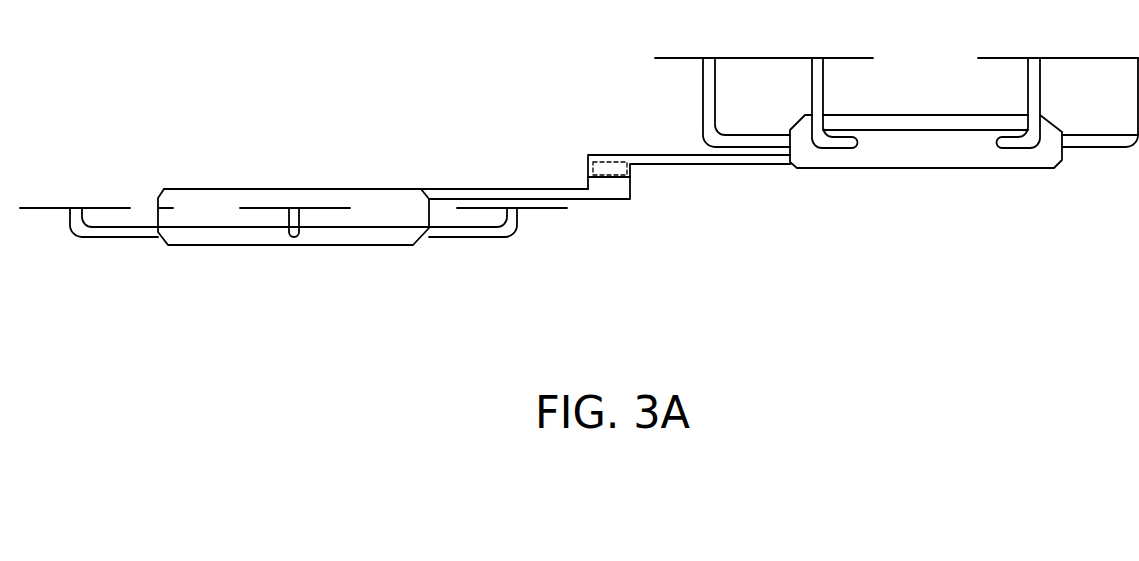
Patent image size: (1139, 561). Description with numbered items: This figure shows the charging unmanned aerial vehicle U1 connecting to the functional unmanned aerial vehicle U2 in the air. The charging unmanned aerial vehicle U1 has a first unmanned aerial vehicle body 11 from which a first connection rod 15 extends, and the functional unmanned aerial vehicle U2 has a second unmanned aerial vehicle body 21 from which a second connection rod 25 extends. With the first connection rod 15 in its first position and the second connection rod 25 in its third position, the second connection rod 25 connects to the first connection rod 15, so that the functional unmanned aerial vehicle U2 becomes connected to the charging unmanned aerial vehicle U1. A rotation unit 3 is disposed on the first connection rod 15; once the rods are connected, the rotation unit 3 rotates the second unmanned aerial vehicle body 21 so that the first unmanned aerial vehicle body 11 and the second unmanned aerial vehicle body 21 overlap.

The second unmanned aerial vehicle body 21 is at (173, 207).
The functional unmanned aerial vehicle U2 is at (293, 182).
The second connection rod 25 is at (520, 192).
The rotation unit 3 is at (608, 160).
The first connection rod 15 is at (659, 158).
The first unmanned aerial vehicle body 11 is at (813, 157).
The charging unmanned aerial vehicle U1 is at (1023, 177).